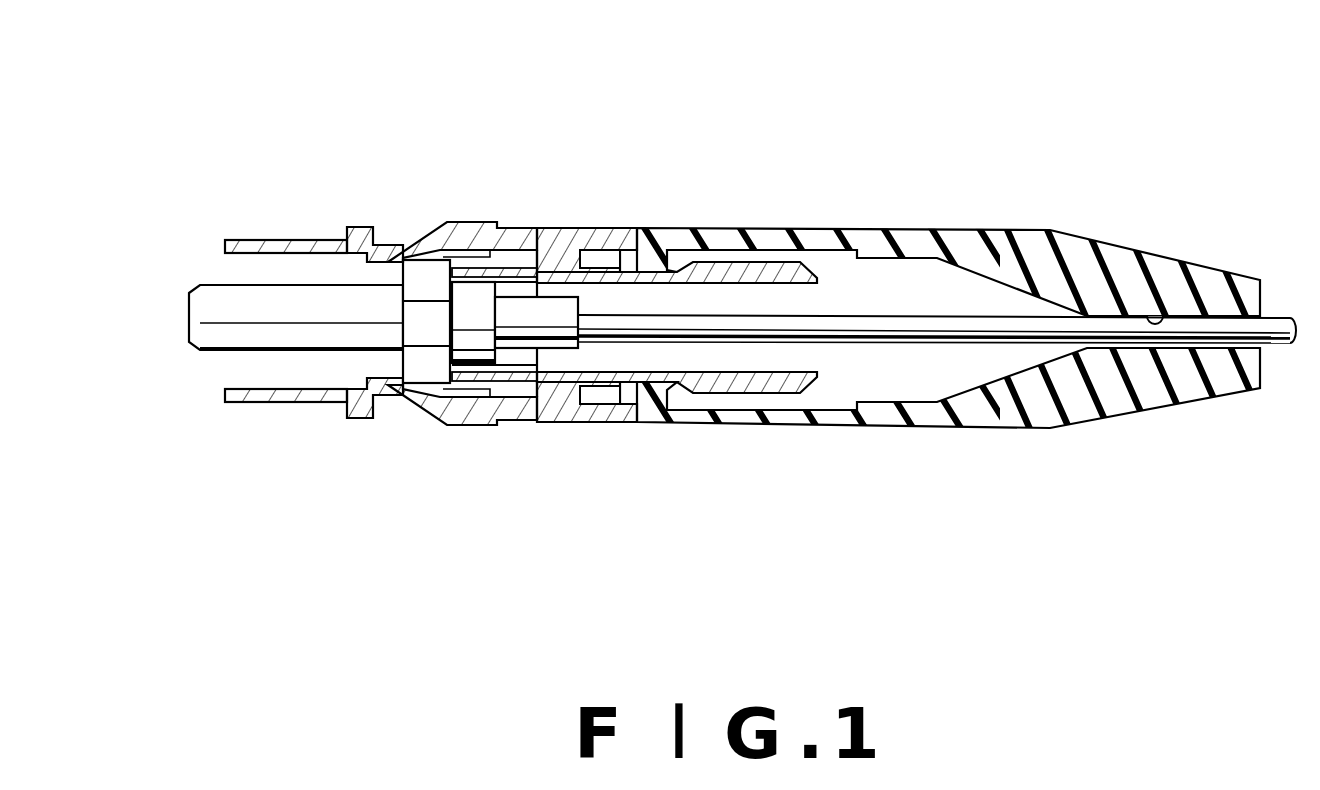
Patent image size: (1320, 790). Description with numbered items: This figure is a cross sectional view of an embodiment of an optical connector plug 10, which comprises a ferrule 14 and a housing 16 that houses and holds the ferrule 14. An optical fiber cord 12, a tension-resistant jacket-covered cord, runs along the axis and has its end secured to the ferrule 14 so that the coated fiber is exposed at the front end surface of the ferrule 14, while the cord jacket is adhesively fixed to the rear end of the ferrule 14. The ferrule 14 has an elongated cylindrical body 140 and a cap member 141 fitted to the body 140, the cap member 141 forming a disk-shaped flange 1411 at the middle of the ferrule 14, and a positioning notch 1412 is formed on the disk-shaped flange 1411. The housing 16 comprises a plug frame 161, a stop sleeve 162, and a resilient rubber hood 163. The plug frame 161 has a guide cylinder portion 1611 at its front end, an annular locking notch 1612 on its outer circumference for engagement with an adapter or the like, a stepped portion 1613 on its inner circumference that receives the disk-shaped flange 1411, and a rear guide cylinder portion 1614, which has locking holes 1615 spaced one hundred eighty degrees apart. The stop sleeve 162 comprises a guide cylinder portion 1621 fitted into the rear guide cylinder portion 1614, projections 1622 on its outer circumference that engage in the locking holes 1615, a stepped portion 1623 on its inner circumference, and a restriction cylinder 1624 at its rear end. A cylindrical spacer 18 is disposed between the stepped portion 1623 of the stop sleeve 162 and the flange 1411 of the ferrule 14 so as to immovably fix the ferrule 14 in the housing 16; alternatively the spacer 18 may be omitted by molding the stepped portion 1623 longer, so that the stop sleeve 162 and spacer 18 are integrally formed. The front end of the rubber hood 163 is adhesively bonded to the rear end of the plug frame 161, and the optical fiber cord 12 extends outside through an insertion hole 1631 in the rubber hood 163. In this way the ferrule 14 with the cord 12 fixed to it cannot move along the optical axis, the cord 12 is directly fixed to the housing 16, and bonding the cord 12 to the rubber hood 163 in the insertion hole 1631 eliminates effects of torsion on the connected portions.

The optical connector plug 10 is at (714, 194).
The optical fiber cord 12 is at (881, 318).
The ferrule 14 is at (423, 66).
The elongated cylindrical body 140 is at (290, 290).
The cap member 141 is at (468, 290).
The disk-shaped flange 1411 is at (423, 270).
The positioning notch 1412 is at (413, 320).
The housing 16 is at (1042, 628).
The cylindrical spacer 18 is at (487, 222).
The plug frame 161 is at (473, 426).
The guide cylinder portion 1611 is at (275, 403).
The annular locking notch 1612 is at (382, 408).
The stepped portion 1613 is at (412, 403).
The rear guide cylinder portion 1614 is at (545, 222).
The locking holes 1615 is at (574, 403).
The stop sleeve 162 is at (614, 408).
The guide cylinder portion 1621 is at (506, 405).
The projections 1622 is at (567, 248).
The stepped portion 1623 is at (537, 399).
The restriction cylinder 1624 is at (772, 262).
The rubber hood 163 is at (1020, 429).
The insertion hole 1631 is at (1152, 315).